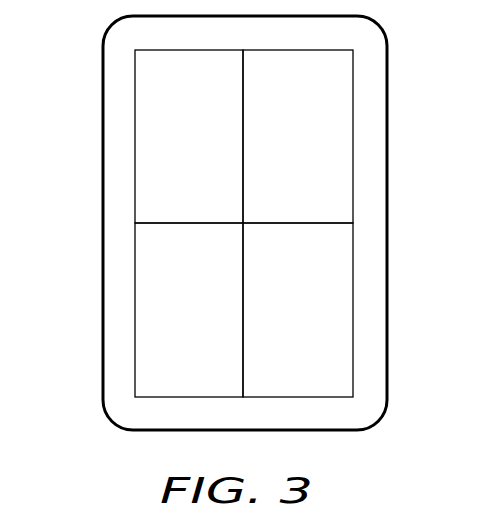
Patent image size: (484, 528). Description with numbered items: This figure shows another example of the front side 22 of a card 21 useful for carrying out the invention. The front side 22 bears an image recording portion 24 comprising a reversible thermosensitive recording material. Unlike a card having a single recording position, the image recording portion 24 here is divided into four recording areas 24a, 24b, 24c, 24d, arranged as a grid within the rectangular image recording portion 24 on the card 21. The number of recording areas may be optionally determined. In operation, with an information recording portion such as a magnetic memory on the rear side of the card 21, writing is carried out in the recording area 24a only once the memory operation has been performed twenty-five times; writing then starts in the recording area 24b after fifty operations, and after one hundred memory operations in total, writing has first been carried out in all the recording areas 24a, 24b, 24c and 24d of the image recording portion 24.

The card 21 is at (231, 223).
The front side 22 is at (375, 70).
The image recording portion 24 is at (285, 223).
The recording area 24a is at (207, 153).
The recording area 24b is at (313, 153).
The recording area 24c is at (206, 327).
The recording area 24d is at (313, 327).